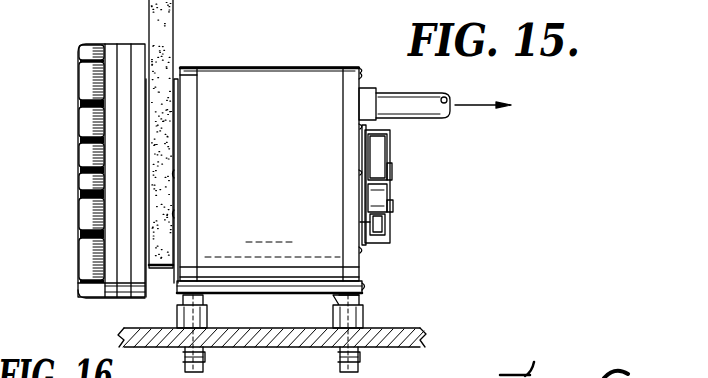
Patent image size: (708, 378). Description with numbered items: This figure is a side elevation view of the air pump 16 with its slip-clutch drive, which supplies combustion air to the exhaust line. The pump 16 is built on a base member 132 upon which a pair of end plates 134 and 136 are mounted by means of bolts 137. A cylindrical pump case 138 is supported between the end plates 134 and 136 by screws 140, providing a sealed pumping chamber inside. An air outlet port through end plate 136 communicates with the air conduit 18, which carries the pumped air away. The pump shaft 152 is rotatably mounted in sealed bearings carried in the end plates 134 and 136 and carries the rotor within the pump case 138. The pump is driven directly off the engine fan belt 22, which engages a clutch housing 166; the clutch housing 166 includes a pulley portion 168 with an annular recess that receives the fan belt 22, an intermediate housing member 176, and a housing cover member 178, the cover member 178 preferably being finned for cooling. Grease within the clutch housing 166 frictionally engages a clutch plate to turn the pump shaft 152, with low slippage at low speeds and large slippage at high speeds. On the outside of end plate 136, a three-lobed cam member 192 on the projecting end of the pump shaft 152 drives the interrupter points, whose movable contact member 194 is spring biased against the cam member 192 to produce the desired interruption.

The pump 16 is at (323, 61).
The air conduit 18 is at (430, 112).
The engine fan belt 22 is at (166, 22).
The base member 132 is at (281, 340).
The end plate 134 is at (190, 67).
The end plate 136 is at (352, 265).
The bolts 137 is at (355, 367).
The cylindrical pump case 138 is at (252, 78).
The screws 140 is at (362, 290).
The pump shaft 152 is at (388, 178).
The clutch housing 166 is at (108, 39).
The pulley portion 168 is at (138, 85).
The intermediate housing member 176 is at (120, 143).
The housing cover member 178 is at (85, 255).
The multilobed cam member 192 is at (380, 150).
The movable contact member 194 is at (385, 222).